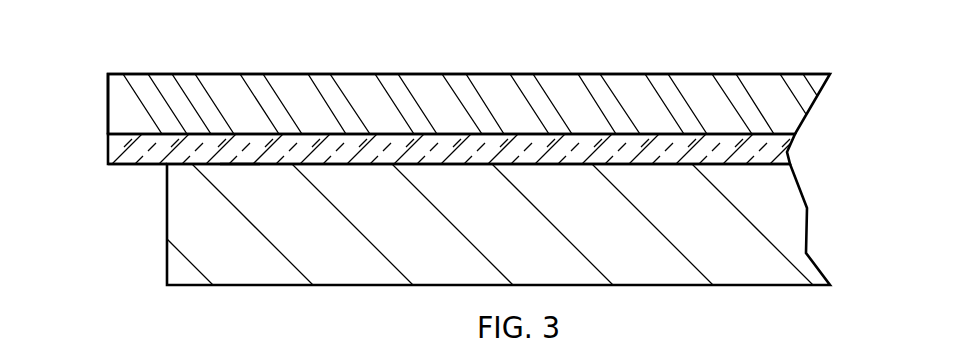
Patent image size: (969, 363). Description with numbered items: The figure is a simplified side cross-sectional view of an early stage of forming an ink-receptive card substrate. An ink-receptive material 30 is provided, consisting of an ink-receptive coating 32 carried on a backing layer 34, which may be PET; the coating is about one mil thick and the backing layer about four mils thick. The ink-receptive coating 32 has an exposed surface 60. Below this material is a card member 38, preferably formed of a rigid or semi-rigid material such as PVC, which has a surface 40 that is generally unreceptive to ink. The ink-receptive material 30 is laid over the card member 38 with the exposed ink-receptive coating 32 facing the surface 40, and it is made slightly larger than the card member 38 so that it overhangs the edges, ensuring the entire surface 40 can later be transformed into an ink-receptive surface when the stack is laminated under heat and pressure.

The ink-receptive material 30 is at (103, 63).
The ink-receptive coating 32 is at (777, 153).
The backing layer 34 is at (765, 85).
The card member 38 is at (173, 223).
The surface 40 is at (241, 142).
The surface 60 is at (141, 180).